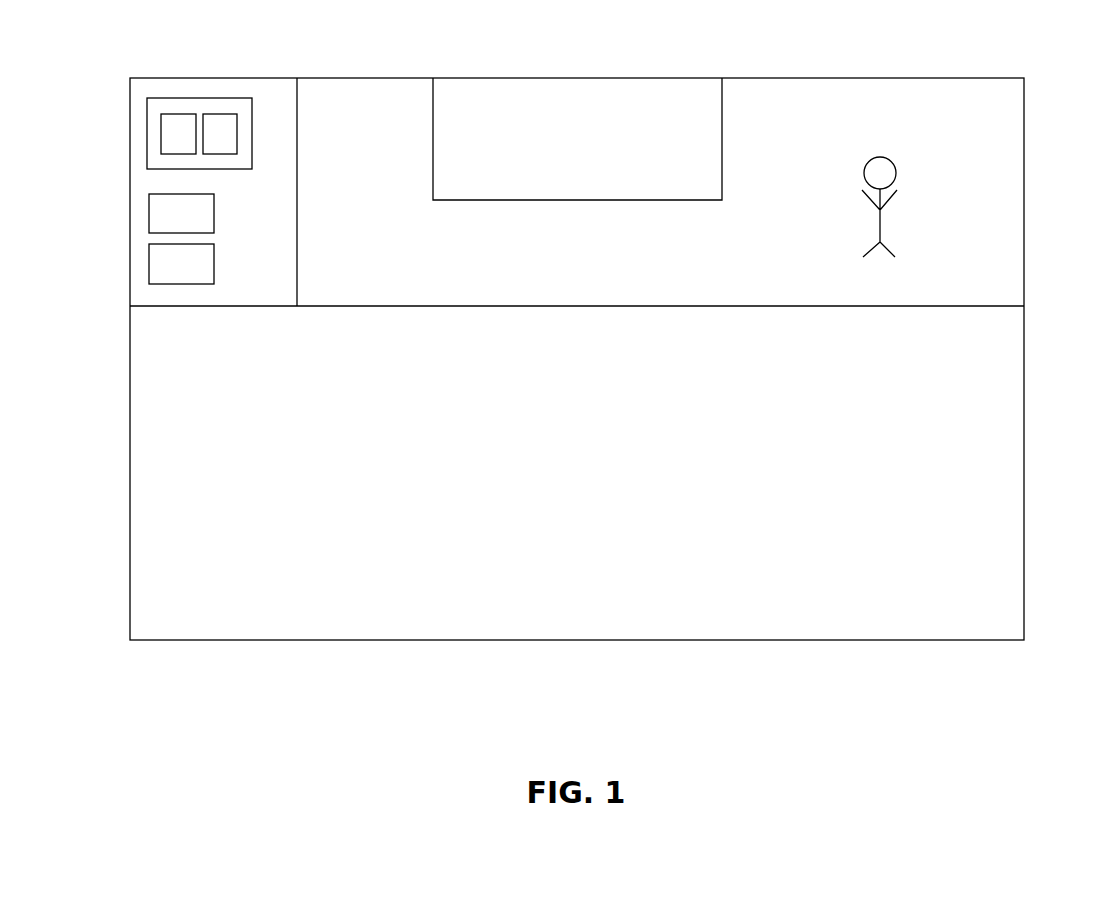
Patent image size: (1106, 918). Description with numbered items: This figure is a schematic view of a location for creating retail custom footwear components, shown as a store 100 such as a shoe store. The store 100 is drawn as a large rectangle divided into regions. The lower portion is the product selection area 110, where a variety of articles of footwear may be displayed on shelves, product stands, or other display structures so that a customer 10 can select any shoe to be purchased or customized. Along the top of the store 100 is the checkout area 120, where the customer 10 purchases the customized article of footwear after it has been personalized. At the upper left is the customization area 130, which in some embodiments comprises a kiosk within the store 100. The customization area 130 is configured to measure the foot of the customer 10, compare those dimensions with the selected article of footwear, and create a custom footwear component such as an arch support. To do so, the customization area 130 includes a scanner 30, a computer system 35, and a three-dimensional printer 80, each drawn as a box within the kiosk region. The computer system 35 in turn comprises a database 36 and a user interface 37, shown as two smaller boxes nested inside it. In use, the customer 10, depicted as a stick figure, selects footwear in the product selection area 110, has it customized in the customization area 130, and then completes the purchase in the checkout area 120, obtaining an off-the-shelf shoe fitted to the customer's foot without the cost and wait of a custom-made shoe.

The store 100 is at (1024, 178).
The product selection area 110 is at (1008, 425).
The checkout area 120 is at (645, 93).
The customization area 130 is at (255, 90).
The computer system 35 is at (178, 92).
The database 36 is at (177, 128).
The user interface 37 is at (218, 128).
The scanner 30 is at (168, 210).
The 3D printer 80 is at (168, 260).
The customer 10 is at (888, 158).